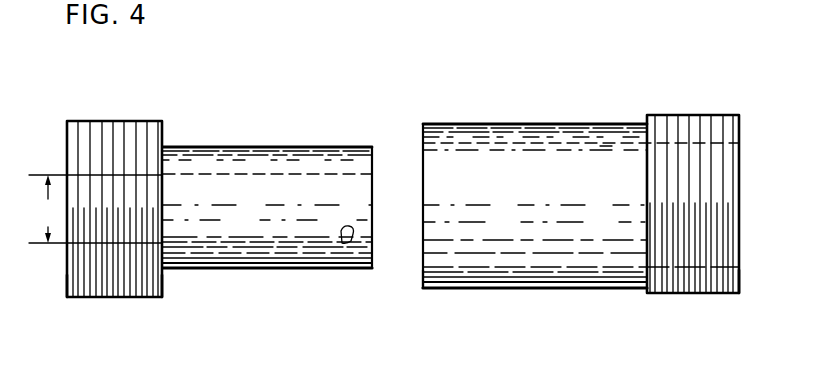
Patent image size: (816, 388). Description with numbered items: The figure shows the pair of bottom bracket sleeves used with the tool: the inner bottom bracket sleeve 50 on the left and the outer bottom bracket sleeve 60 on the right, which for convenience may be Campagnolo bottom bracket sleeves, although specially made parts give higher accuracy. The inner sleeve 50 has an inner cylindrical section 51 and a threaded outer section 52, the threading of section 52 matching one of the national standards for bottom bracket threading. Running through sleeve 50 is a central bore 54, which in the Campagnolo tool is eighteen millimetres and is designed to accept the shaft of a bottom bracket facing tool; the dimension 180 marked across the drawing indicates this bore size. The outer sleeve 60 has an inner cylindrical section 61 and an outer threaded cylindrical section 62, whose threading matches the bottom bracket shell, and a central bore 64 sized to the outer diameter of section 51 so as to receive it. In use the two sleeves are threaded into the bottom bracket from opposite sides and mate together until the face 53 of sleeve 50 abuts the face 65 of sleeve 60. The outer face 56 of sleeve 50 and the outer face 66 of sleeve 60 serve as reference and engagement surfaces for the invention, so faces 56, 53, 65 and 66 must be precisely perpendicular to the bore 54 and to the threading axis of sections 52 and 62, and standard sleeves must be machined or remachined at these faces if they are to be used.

The inner bottom bracket sleeve 50 is at (255, 124).
The inner cylindrical section 51 is at (275, 147).
The threaded outer section 52 is at (118, 121).
The face 53 is at (164, 288).
The central bore 54 is at (342, 243).
The outer face 56 is at (66, 283).
The outer bottom bracket sleeve 60 is at (538, 113).
The inner cylindrical section 61 is at (476, 123).
The outer threaded cylindrical section 62 is at (705, 115).
The central bore 64 is at (600, 150).
The face 65 is at (423, 278).
The outer face 66 is at (742, 283).
The dimension 180 is at (95, 209).